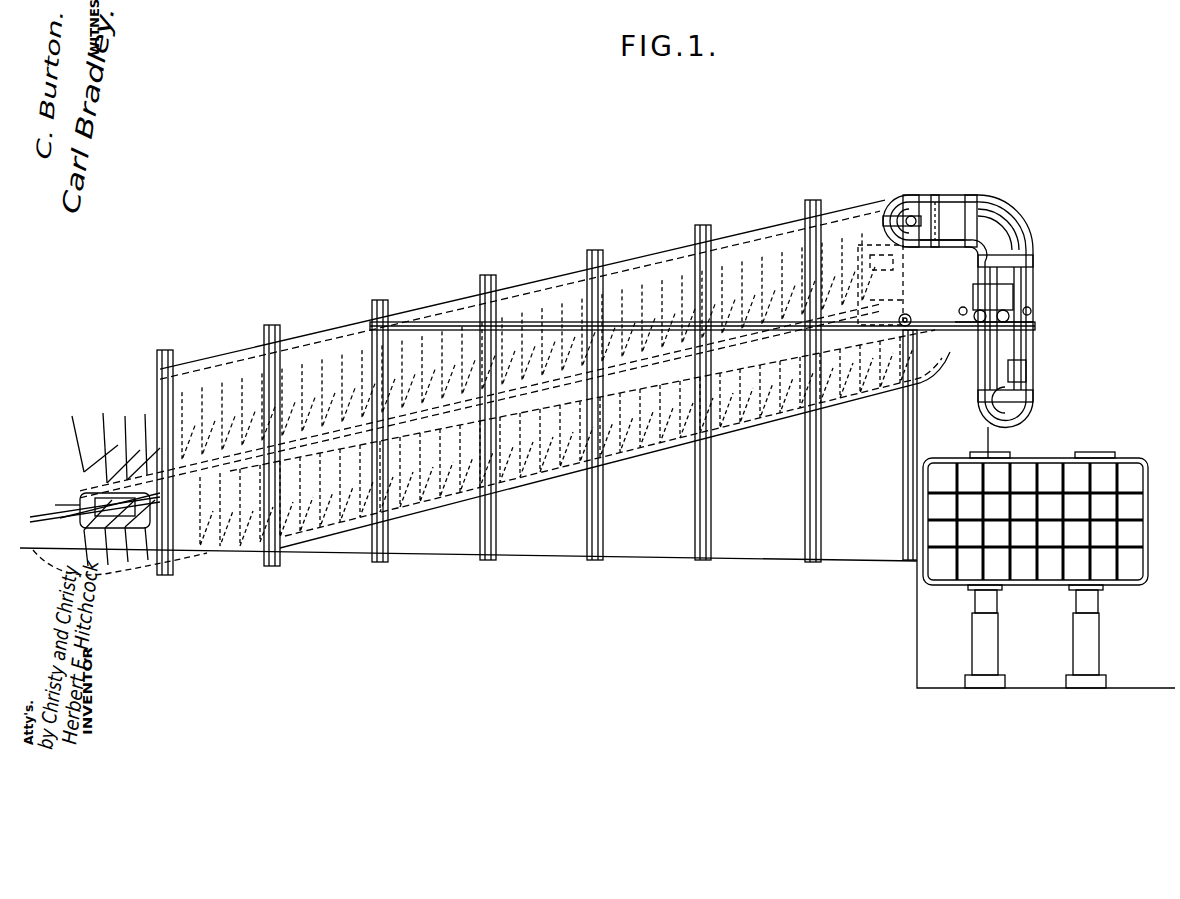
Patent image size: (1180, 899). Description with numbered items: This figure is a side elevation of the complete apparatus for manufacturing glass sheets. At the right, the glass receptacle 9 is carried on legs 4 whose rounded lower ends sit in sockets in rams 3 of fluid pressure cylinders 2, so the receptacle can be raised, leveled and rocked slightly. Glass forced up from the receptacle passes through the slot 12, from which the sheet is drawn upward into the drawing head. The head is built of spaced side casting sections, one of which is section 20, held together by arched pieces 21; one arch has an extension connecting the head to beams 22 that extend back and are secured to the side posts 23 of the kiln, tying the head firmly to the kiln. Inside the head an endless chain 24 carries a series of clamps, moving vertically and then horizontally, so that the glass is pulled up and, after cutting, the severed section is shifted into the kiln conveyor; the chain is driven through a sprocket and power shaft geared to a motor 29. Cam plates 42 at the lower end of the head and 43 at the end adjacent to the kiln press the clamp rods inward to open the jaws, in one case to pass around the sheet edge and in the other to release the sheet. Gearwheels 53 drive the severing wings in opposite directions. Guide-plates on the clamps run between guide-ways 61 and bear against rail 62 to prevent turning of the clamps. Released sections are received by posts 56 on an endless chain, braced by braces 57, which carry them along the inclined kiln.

The fluid pressure cylinder 2 is at (992, 644).
The ram 3 is at (996, 605).
The leg 4 is at (970, 590).
The tank 9 is at (1103, 460).
The slot 12 is at (997, 460).
The side casting section 20 is at (1003, 205).
The arched piece 21 is at (972, 200).
The beam 22 is at (428, 320).
The side post 23 is at (282, 330).
The endless chain 24 is at (1033, 238).
The motor 29 is at (866, 256).
The cam plate 42 is at (1018, 372).
The cam plate 43 is at (908, 215).
The gearwheel 53 is at (1033, 290).
The post 56 is at (106, 450).
The brace 57 is at (83, 481).
The guide-way 61 is at (945, 241).
The rail 62 is at (938, 205).